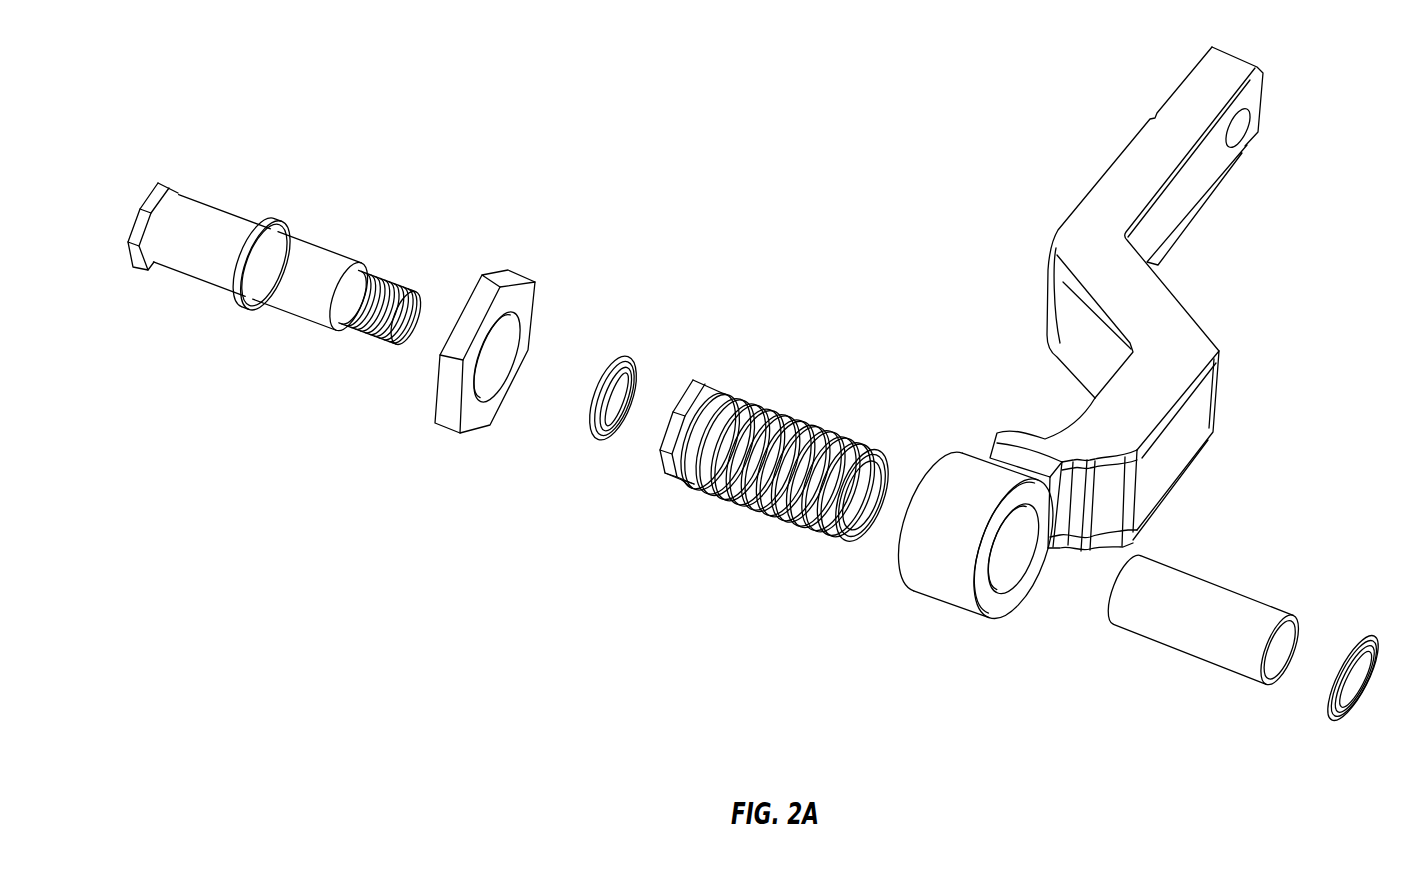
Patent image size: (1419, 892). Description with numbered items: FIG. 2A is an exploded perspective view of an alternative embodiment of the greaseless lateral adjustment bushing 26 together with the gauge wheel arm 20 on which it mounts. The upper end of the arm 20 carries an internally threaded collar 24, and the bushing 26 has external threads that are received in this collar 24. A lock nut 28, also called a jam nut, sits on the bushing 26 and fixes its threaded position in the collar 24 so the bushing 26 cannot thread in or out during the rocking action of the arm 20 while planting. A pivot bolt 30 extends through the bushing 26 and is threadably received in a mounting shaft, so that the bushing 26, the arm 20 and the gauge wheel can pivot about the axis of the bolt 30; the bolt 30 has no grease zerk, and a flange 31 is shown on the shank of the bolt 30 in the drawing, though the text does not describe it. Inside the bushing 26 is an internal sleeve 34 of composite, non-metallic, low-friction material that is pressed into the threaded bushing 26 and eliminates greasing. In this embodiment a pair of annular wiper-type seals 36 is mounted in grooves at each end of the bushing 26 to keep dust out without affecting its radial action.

The arm 20 is at (1090, 230).
The internally threaded collar 24 is at (928, 594).
The greaseless lateral adjustment bushing 26 is at (704, 388).
The lock nut 28 is at (518, 300).
The pivot bolt 30 is at (211, 224).
The bolt flange 31 is at (244, 306).
The internal sleeve 34 is at (1212, 594).
The annular seals 36 is at (597, 431).